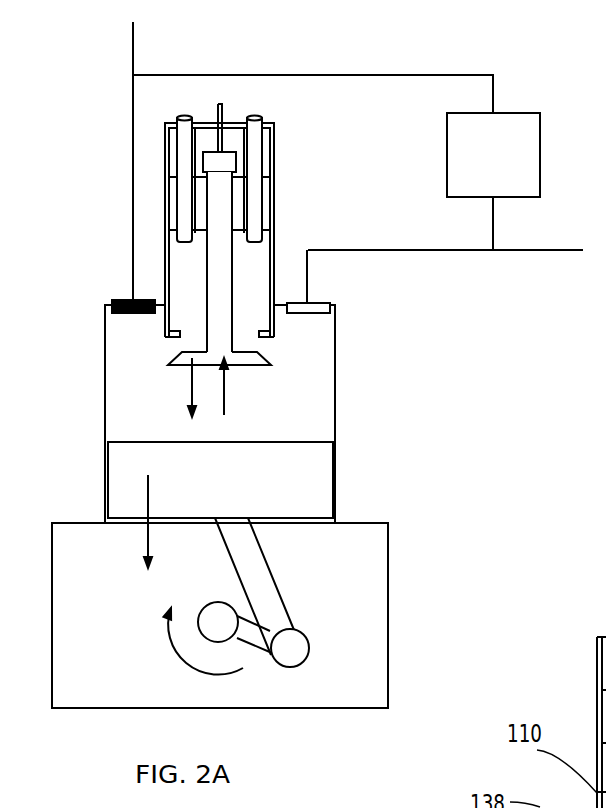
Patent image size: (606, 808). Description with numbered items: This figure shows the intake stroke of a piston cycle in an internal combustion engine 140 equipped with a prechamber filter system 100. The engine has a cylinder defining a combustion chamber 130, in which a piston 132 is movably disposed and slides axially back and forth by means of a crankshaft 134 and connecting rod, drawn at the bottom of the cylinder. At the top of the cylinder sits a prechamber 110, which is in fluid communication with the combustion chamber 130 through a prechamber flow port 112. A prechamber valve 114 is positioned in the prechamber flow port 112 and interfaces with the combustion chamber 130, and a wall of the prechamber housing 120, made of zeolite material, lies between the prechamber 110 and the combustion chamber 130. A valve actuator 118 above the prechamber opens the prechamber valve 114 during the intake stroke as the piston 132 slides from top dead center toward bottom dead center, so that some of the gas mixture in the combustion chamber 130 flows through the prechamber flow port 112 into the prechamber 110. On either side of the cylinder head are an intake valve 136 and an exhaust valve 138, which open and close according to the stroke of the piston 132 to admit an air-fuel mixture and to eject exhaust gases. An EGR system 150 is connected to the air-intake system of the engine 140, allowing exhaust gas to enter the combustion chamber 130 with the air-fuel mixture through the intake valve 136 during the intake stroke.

The prechamber filter system 100 is at (330, 225).
The prechamber 110 is at (245, 266).
The prechamber flow port 112 is at (252, 338).
The prechamber valve 114 is at (243, 367).
The valve actuator 118 is at (227, 163).
The prechamber housing 120 is at (273, 330).
The combustion chamber 130 is at (153, 421).
The piston 132 is at (318, 488).
The crankshaft 134 is at (248, 633).
The intake valve 136 is at (326, 303).
The exhaust valve 138 is at (112, 301).
The internal combustion engine 140 is at (309, 524).
The EGR system 150 is at (511, 166).